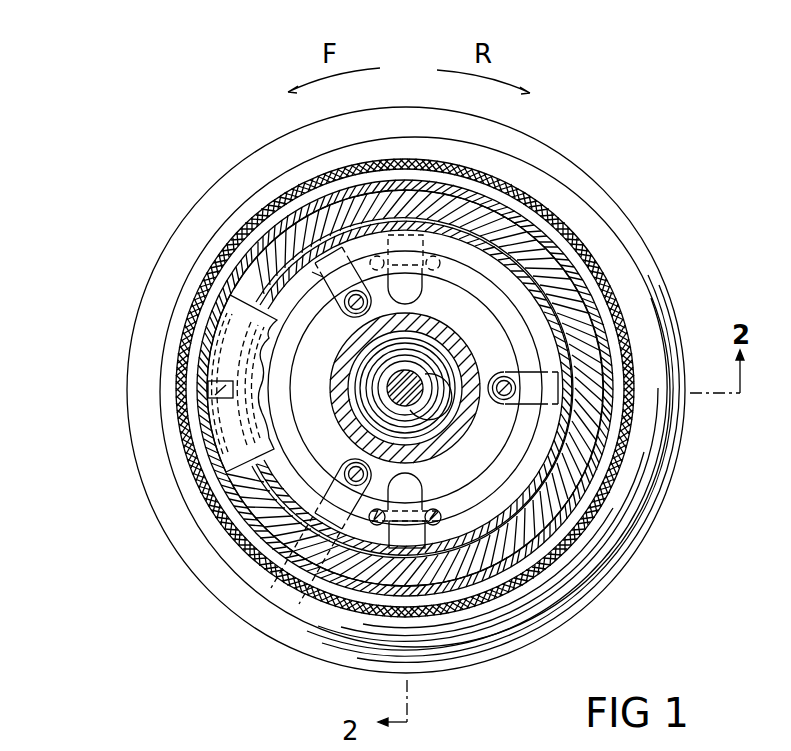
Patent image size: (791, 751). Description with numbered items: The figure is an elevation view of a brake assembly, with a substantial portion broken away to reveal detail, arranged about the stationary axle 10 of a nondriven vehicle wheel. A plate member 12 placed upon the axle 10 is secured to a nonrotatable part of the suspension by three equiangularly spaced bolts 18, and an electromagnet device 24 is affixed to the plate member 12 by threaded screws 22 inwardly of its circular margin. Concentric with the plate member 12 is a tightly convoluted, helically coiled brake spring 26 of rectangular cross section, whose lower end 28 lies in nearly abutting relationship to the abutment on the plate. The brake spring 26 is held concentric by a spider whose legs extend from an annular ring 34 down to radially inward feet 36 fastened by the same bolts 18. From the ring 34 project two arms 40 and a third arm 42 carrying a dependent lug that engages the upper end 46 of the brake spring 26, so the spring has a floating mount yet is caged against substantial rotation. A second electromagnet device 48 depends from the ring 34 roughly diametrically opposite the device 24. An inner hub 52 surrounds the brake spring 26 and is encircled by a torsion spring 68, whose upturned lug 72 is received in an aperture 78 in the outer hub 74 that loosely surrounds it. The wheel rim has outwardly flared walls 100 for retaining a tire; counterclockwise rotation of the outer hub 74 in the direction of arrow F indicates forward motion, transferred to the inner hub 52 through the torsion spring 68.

The stationary axle 10 is at (418, 385).
The plate member 12 is at (319, 428).
The bolts 18 is at (348, 313).
The threaded screws 22 is at (433, 510).
The electromagnet device 24 is at (533, 195).
The brake spring 26 is at (492, 268).
The end of lowermost convolution 28 is at (287, 592).
The annular ring 34 is at (505, 305).
The feet 36 is at (327, 313).
The arms 40 is at (565, 402).
The third arm 42 is at (318, 277).
The end of uppermost convolution 46 is at (313, 273).
The second electromagnet device 48 is at (370, 543).
The inner hub 52 is at (558, 340).
The torsion spring 68 is at (548, 512).
The upturned lug 72 is at (212, 405).
The outer hub 74 is at (227, 437).
The aperture 78 is at (208, 388).
The outwardly flared walls 100 is at (662, 507).